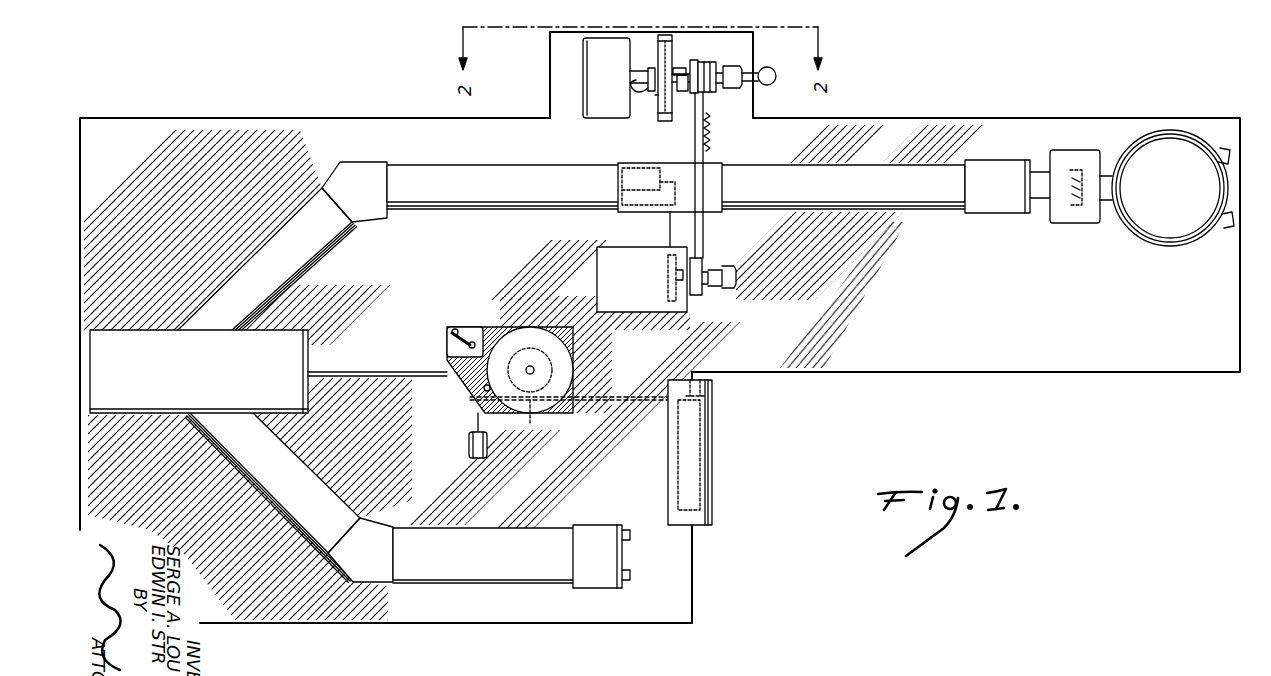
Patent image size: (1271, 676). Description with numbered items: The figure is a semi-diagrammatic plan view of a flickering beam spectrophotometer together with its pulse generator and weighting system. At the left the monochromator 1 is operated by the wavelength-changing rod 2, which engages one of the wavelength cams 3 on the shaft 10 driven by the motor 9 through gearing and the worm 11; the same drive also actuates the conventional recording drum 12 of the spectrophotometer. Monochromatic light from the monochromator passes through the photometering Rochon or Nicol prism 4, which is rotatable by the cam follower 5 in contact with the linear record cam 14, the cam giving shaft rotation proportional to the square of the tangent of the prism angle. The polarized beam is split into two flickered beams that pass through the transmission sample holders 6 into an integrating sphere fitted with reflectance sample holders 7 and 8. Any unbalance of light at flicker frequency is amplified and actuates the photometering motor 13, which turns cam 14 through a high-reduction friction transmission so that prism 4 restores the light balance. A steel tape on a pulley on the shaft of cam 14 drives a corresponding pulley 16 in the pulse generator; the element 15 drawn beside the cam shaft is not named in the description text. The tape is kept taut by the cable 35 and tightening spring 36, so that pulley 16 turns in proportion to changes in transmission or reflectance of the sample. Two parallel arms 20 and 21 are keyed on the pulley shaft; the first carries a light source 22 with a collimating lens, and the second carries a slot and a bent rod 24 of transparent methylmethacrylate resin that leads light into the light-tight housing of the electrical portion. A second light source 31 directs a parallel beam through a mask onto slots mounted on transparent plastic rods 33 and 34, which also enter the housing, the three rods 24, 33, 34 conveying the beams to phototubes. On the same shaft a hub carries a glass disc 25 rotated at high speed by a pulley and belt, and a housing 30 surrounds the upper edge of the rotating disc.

The monochromator 1 is at (199, 371).
The wavelength-changing rod 2 is at (371, 370).
The wavelength cams 3 is at (492, 343).
The photometering prism 4 is at (642, 184).
The cam follower 5 is at (668, 230).
The transmission sample holders 6 is at (1074, 168).
The reflectance sample holder 7 is at (1222, 150).
The reflectance sample holder 8 is at (1226, 230).
The motor 9 is at (468, 446).
The shaft 10 is at (536, 370).
The worm 11 is at (580, 420).
The recording drum 12 is at (712, 452).
The photometering motor 13 is at (735, 283).
The linear record cam 14 is at (670, 310).
The flange 15 is at (704, 242).
The pulley 16 is at (697, 68).
The arm 20 is at (668, 115).
The arm 21 is at (614, 110).
The light source 22 is at (688, 92).
The bent rod 24 is at (640, 95).
The glass disc 25 is at (656, 96).
The housing 30 is at (662, 120).
The second light source 31 is at (770, 68).
The plastic rod 33 is at (735, 65).
The plastic rod 34 is at (646, 73).
The cable 35 is at (705, 150).
The tightening spring 36 is at (711, 127).